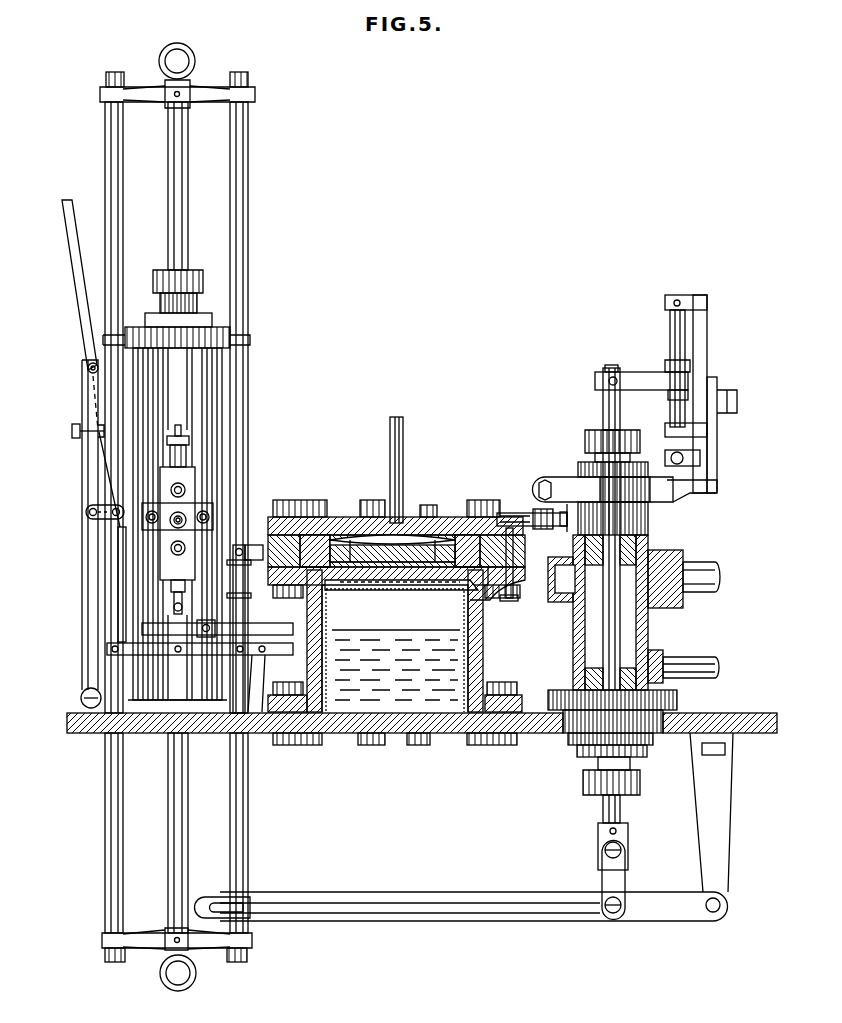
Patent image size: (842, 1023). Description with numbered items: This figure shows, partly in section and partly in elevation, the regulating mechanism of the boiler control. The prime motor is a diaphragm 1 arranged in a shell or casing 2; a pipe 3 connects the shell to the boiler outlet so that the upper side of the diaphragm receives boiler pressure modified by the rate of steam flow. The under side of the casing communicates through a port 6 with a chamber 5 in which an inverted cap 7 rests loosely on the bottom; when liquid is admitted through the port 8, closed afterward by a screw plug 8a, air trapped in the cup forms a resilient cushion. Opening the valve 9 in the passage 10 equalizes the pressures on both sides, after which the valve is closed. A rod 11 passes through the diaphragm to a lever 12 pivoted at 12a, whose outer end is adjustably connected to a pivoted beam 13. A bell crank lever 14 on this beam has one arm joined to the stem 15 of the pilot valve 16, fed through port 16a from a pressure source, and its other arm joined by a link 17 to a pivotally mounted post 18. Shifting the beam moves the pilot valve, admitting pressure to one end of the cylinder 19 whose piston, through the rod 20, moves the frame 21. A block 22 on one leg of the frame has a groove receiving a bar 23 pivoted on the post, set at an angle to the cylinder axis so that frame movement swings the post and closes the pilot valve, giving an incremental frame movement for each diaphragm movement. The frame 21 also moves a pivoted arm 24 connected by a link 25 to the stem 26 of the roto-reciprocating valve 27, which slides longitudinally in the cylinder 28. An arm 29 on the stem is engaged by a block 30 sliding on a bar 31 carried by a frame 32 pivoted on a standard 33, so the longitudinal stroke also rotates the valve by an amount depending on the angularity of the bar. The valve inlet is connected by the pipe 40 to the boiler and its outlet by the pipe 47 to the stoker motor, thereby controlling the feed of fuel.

The diaphragm 1 is at (425, 548).
The shell or casing 2 is at (395, 503).
The pipe 3 is at (403, 436).
The chamber 5 is at (483, 651).
The port 6 is at (392, 587).
The inverted cap 7 is at (464, 613).
The port 8 is at (502, 577).
The screw plug 8a is at (520, 585).
The valve 9 is at (510, 510).
The passage 10 is at (525, 540).
The rod 11 is at (400, 560).
The lever 12 is at (253, 545).
The lever pivot 12a is at (247, 611).
The beam 13 is at (273, 652).
The bell crank lever 14 is at (118, 580).
The stem 15 is at (172, 600).
The pilot valve 16 is at (183, 480).
The port 16a is at (176, 520).
The link 17 is at (97, 530).
The post 18 is at (88, 564).
The cylinder 19 is at (203, 405).
The rod 20 is at (184, 190).
The frame 21 is at (248, 212).
The block 22 is at (100, 510).
The bar 23 is at (80, 311).
The arm 24 is at (409, 898).
The link 25 is at (598, 881).
The stem 26 is at (603, 411).
The roto-reciprocating valve 27 is at (580, 650).
The cylinder 28 is at (650, 631).
The arm 29 is at (648, 376).
The block 30 is at (668, 366).
The bar 31 is at (685, 339).
The frame 32 is at (700, 360).
The standard 33 is at (715, 461).
The pipe 40 is at (710, 566).
The pipe 47 is at (710, 659).